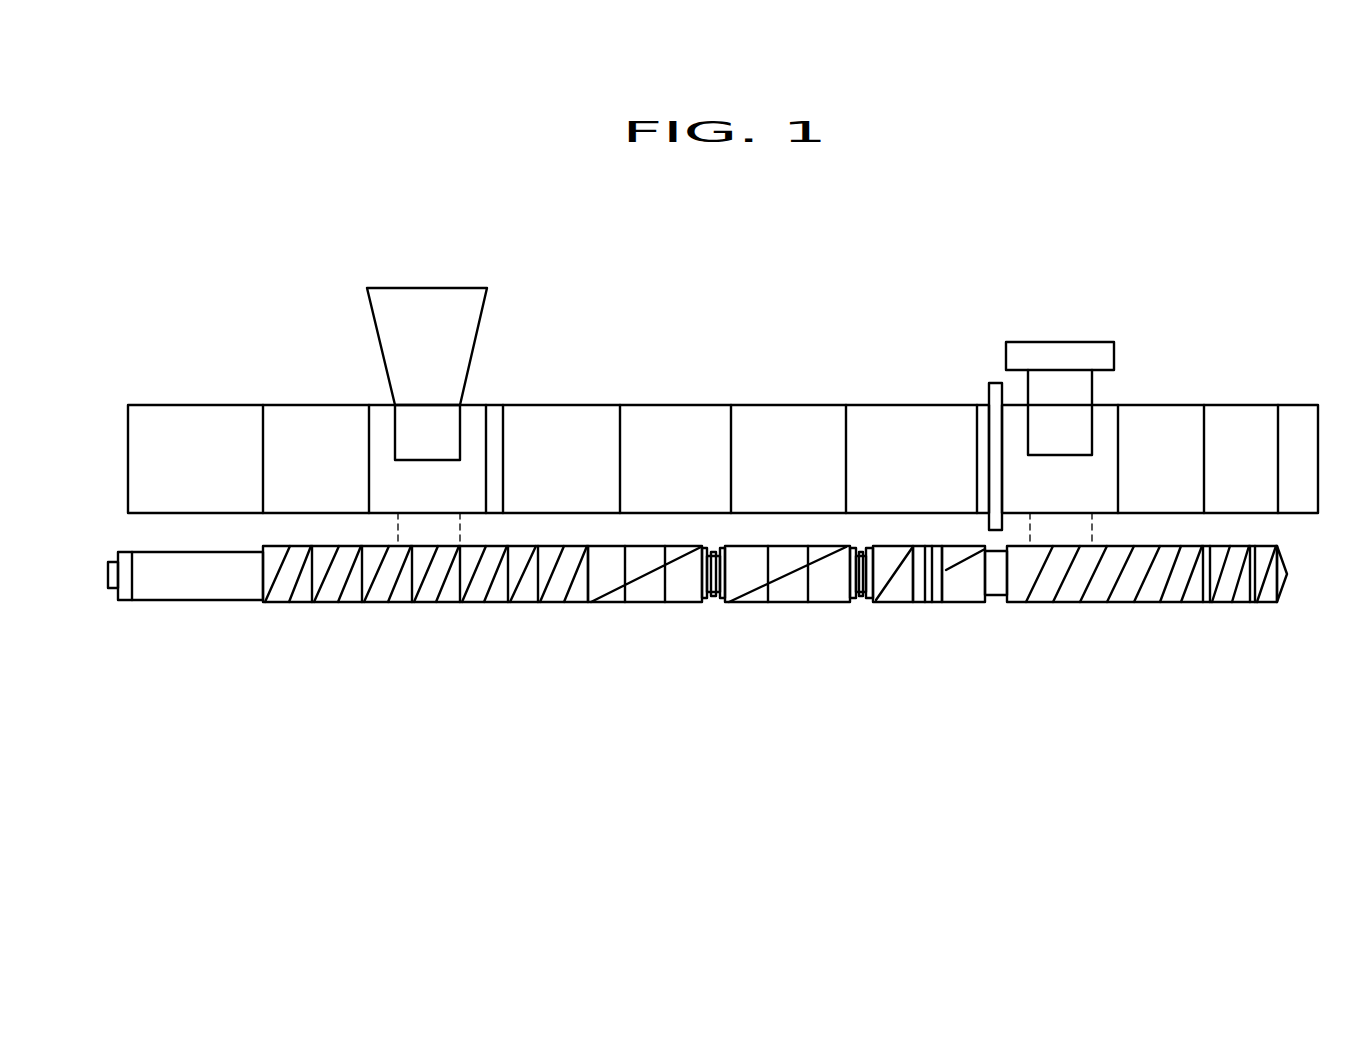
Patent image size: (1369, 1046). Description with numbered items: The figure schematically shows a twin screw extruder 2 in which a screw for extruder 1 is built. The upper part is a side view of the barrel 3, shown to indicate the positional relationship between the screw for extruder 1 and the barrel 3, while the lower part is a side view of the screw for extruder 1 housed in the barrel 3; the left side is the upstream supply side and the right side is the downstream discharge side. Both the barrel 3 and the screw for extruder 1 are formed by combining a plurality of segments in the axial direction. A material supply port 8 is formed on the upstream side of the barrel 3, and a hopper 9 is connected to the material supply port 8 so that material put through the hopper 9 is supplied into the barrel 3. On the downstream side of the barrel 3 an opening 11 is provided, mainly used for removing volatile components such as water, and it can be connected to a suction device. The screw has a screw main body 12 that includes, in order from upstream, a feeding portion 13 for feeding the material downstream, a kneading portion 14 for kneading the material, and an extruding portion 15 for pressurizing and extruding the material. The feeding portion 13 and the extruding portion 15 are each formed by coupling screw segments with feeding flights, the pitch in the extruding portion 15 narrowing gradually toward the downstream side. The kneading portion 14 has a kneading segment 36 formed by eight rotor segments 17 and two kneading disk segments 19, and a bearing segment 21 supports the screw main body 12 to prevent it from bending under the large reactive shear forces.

The screw for extruder 1 is at (735, 554).
The twin screw extruder 2 is at (1212, 278).
The barrel 3 is at (318, 423).
The material supply port 8 is at (456, 430).
The hopper 9 is at (430, 307).
The opening 11 is at (1060, 350).
The screw main body 12 is at (698, 610).
The feeding portion 13 is at (425, 554).
The kneading portion 14 is at (797, 554).
The extruding portion 15 is at (1147, 554).
The rotor segment 17 is at (685, 545).
The kneading disk segment 19 is at (715, 545).
The bearing segment 21 is at (925, 548).
The kneading segment 36 is at (821, 515).